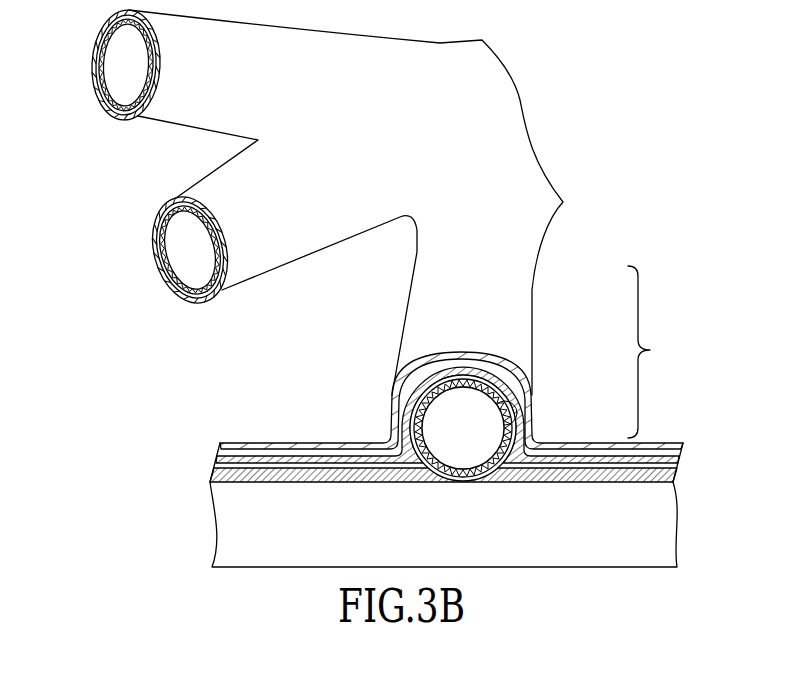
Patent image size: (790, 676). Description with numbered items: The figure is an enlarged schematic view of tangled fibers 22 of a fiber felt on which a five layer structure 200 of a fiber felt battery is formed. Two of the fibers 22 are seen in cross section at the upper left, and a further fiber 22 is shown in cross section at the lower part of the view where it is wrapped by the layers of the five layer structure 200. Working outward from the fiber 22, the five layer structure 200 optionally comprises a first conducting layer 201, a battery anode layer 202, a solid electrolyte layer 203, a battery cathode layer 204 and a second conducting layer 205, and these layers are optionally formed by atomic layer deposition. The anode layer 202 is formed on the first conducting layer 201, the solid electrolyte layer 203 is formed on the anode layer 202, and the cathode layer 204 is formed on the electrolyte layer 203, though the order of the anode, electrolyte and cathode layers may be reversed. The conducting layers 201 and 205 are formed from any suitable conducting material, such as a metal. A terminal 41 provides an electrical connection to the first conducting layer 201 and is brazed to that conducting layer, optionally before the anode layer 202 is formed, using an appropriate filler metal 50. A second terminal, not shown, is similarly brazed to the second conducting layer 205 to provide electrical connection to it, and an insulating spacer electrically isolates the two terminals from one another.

The tangled fibers 22 is at (182, 245).
The terminal 41 is at (471, 540).
The filler metal 50 is at (210, 471).
The five layer structure 200 is at (650, 350).
The first conducting layer 201 is at (517, 411).
The battery anode layer 202 is at (498, 388).
The solid electrolyte layer 203 is at (487, 366).
The battery cathode layer 204 is at (470, 351).
The second conducting layer 205 is at (533, 423).